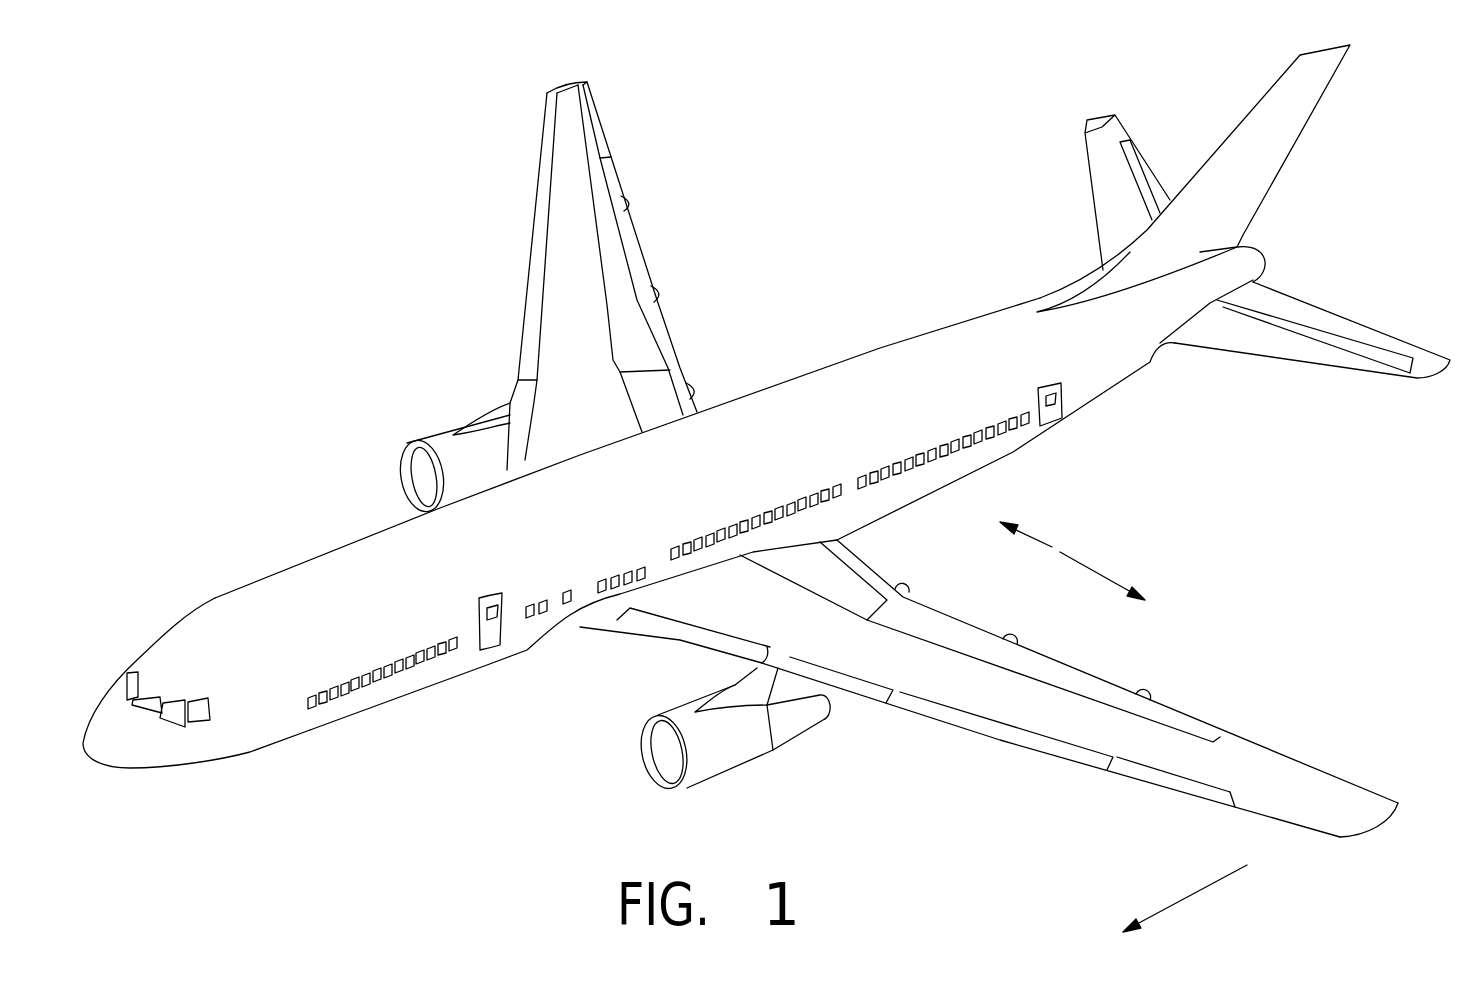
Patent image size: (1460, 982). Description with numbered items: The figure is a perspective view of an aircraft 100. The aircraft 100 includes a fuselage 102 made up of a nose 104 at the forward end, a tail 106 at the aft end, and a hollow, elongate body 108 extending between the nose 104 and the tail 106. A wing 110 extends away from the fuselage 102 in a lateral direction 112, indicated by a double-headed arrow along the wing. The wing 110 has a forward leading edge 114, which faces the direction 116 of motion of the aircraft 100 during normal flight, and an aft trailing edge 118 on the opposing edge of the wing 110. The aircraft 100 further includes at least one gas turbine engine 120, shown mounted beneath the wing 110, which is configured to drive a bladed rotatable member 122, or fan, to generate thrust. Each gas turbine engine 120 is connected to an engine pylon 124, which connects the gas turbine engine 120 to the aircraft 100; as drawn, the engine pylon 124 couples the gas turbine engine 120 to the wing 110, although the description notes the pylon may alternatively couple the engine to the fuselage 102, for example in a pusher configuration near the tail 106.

The aircraft 100 is at (358, 284).
The fuselage 102 is at (788, 423).
The nose 104 is at (202, 642).
The tail 106 is at (1137, 377).
The hollow, elongate body 108 is at (542, 561).
The wing 110 is at (1000, 710).
The lateral direction 112 is at (1062, 549).
The forward leading edge 114 is at (1232, 806).
The direction of motion 116 is at (1197, 895).
The aft trailing edge 118 is at (1280, 752).
The gas turbine engine 120 is at (437, 442).
The bladed rotatable member 122 is at (670, 757).
The engine pylon 124 is at (493, 425).